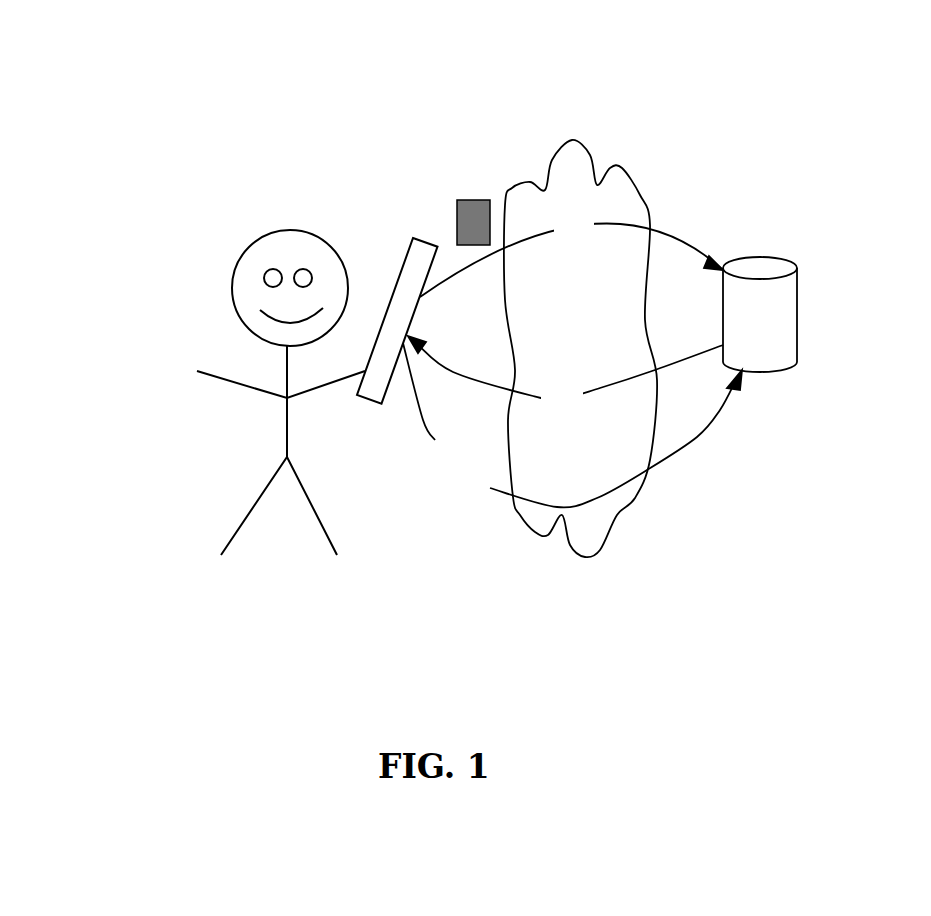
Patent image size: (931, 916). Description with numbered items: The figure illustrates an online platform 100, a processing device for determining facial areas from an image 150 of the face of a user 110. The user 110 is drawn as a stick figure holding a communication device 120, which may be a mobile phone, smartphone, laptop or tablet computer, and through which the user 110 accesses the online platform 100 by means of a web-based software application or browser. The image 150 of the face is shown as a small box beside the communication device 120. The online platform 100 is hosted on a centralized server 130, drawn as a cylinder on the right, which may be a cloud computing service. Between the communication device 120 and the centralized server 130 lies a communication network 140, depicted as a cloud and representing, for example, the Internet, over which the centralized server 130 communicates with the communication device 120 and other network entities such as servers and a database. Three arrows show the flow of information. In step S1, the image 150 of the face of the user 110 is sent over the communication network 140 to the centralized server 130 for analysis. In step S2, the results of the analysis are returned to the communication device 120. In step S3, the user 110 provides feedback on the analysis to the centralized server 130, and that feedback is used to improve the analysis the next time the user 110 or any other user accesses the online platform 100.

The online platform 100 is at (153, 90).
The user 110 is at (245, 292).
The communication device 120 is at (399, 257).
The centralized server 130 is at (748, 292).
The communication network 140 is at (582, 170).
The image 150 is at (473, 200).
The step S1 is at (571, 255).
The step S2 is at (565, 376).
The step S3 is at (572, 425).